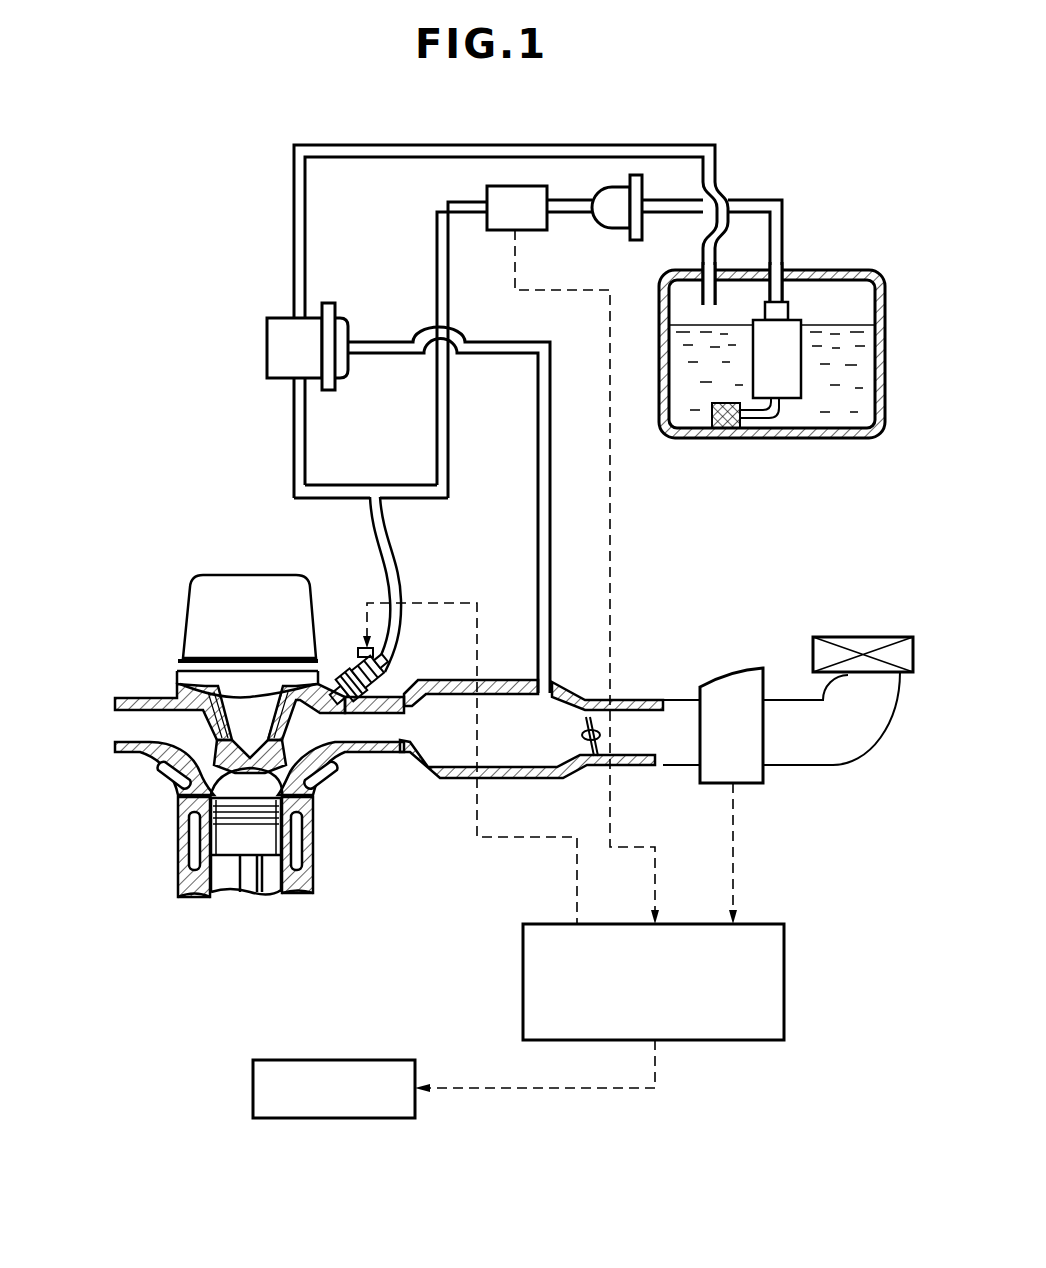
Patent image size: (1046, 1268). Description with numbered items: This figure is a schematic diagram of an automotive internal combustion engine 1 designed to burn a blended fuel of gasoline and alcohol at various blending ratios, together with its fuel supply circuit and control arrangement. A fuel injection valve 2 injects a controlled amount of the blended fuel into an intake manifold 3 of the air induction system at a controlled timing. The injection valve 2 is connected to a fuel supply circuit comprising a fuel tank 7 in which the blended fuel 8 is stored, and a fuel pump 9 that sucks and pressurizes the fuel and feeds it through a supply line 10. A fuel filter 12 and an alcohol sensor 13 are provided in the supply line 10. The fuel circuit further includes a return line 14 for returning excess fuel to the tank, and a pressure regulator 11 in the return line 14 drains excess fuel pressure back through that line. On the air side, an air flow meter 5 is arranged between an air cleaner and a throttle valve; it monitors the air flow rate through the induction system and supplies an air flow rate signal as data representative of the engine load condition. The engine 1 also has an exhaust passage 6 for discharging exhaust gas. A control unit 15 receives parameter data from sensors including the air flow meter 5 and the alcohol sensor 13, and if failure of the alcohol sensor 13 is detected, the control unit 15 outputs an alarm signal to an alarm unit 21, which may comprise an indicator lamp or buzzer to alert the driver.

The internal combustion engine 1 is at (190, 805).
The fuel injection valve 2 is at (383, 673).
The intake manifold 3 is at (446, 783).
The air flow meter 5 is at (718, 690).
The exhaust passage 6 is at (147, 699).
The fuel tank 7 is at (706, 437).
The blended fuel 8 is at (845, 405).
The fuel pump 9 is at (790, 395).
The supply line 10 is at (437, 268).
The pressure regulator 11 is at (267, 350).
The fuel filter 12 is at (606, 229).
The alcohol sensor 13 is at (498, 229).
The return line 14 is at (295, 268).
The control unit 15 is at (757, 929).
The alarm unit 21 is at (377, 1061).